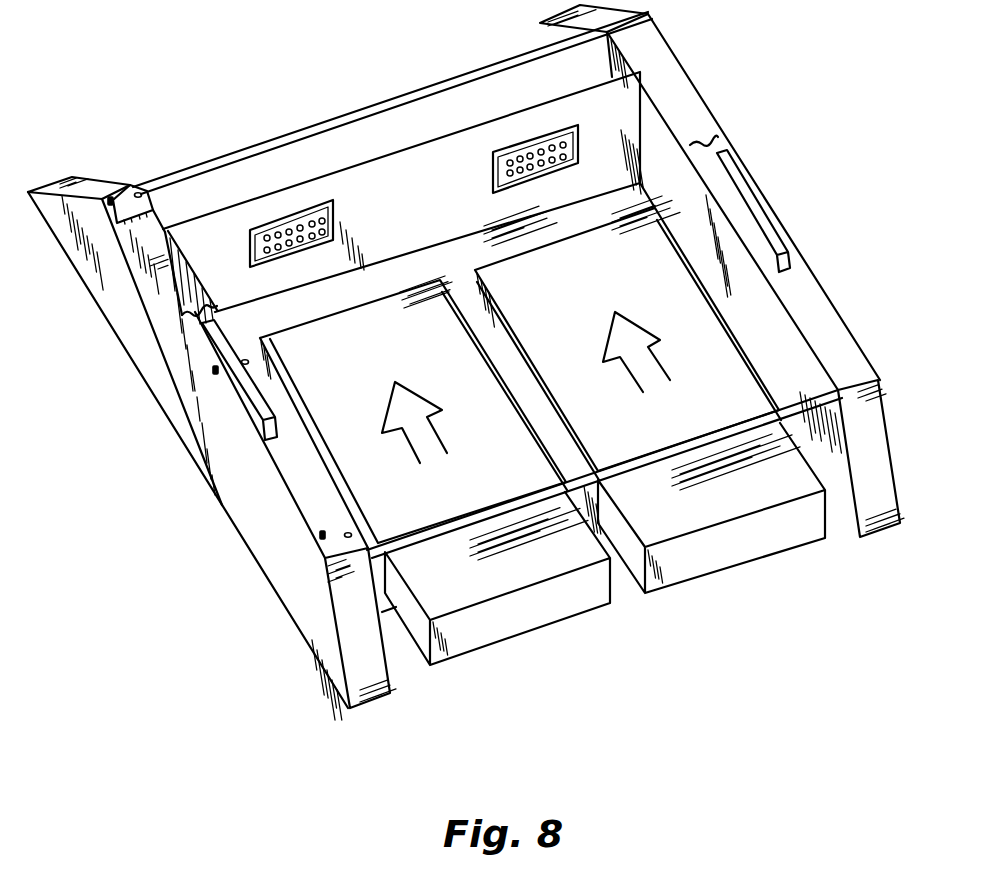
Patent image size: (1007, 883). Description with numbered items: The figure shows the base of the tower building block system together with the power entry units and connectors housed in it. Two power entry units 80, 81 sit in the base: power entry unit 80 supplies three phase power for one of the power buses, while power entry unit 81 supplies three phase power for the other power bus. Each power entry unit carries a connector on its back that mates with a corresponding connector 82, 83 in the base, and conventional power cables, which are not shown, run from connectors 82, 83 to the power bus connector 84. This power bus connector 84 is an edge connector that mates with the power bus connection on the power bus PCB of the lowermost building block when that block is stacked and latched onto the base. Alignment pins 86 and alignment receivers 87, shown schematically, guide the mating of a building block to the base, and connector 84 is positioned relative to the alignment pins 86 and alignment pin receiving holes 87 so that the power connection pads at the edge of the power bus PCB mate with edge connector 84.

The power entry unit 80 is at (457, 590).
The power entry unit 81 is at (673, 528).
The connector 82 is at (312, 208).
The connector 83 is at (523, 142).
The power bus connector 84 is at (272, 421).
The alignment pins 86 is at (107, 202).
The alignment receivers 87 is at (137, 192).